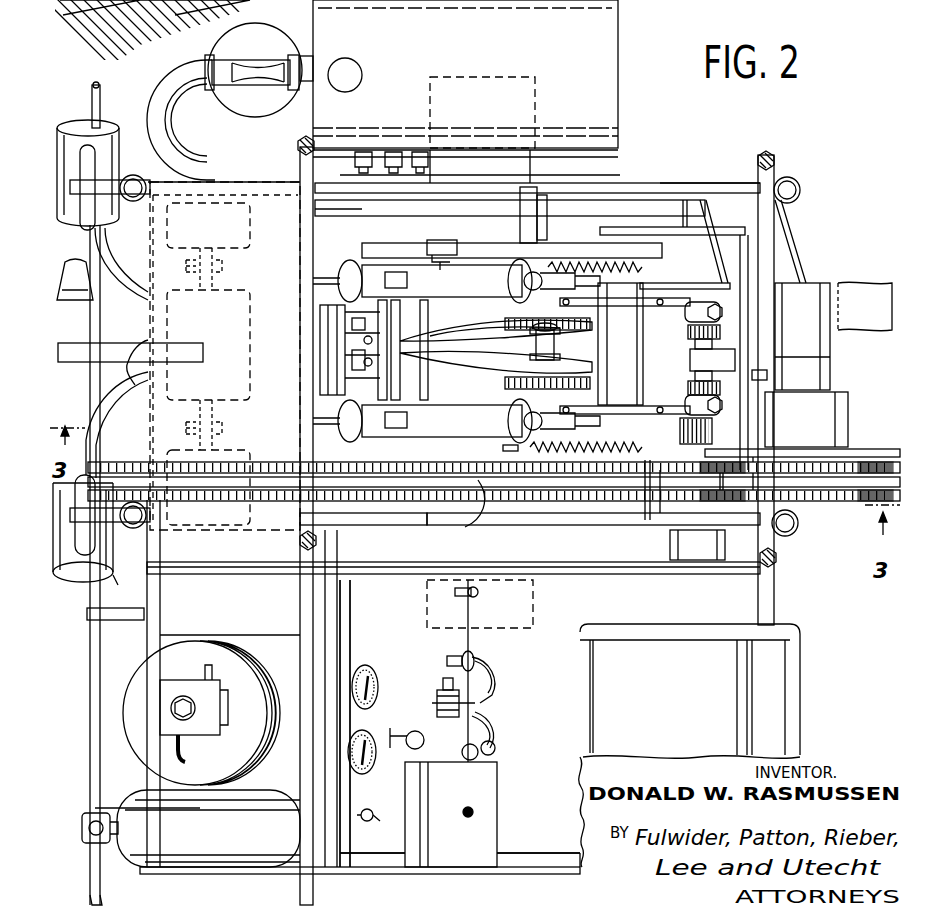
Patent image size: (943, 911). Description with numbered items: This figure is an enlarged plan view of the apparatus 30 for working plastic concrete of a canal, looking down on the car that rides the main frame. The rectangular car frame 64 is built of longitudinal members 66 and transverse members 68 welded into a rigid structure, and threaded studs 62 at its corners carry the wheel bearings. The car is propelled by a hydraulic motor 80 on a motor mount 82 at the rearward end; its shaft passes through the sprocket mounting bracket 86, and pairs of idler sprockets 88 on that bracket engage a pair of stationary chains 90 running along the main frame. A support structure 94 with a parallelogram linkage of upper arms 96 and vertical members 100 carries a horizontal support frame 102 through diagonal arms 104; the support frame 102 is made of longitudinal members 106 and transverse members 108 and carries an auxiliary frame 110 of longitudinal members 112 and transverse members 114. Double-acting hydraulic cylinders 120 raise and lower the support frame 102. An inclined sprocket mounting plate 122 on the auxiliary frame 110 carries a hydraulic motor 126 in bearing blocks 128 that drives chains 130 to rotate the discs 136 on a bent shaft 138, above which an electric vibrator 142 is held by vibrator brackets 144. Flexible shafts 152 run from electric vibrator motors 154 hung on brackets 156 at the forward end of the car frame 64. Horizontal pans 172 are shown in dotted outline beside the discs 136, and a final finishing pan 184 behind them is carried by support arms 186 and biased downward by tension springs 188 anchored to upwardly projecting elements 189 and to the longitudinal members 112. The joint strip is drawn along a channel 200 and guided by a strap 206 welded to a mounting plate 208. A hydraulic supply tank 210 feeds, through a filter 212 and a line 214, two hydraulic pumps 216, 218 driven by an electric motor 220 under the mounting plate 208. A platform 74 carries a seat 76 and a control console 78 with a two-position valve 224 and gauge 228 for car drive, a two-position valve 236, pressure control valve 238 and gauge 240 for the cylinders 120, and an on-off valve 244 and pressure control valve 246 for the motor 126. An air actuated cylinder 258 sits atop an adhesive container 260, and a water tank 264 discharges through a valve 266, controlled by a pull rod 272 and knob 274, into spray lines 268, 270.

The apparatus 30 is at (740, 130).
The threaded stud 62 is at (298, 145).
The car frame 64 is at (673, 182).
The longitudinal members 66 is at (611, 188).
The transverse members 68 is at (314, 248).
The platform 74 is at (460, 723).
The seat 76 is at (649, 625).
The control console 78 is at (471, 638).
The hydraulic motor 80 is at (815, 284).
The motor mount 82 is at (843, 396).
The sprocket mounting bracket 86 is at (868, 450).
The idler sprockets 88 is at (871, 520).
The stationary chains 90 is at (648, 477).
The support structure 94 is at (618, 208).
The upper arms 96 is at (315, 211).
The vertical members 100 is at (545, 220).
The support frame 102 is at (724, 215).
The diagonal arms 104 is at (503, 230).
The longitudinal members 106 is at (676, 233).
The transverse members 108 is at (313, 386).
The auxiliary frame 110 is at (648, 276).
The longitudinal members 112 is at (610, 288).
The transverse members 114 is at (410, 393).
The double-acting hydraulic cylinders 120 is at (469, 351).
The sprocket mounting plate 122 is at (730, 414).
The hydraulic motor 126 is at (688, 551).
The bearing blocks 128 is at (686, 313).
The chains 130 is at (513, 386).
The discs 136 is at (496, 348).
The shaft 138 is at (547, 356).
The electric vibrator 142 is at (642, 344).
The vibrator brackets 144 is at (600, 380).
The flexible shafts 152 is at (108, 286).
The electric vibrator motors 154 is at (98, 123).
The brackets 156 is at (110, 183).
The pans 172 is at (537, 82).
The final finishing pan 184 is at (782, 254).
The support arms 186 is at (632, 250).
The tension springs 188 is at (566, 262).
The upwardly projecting elements 189 is at (503, 229).
The channel 200 is at (73, 301).
The strap 206 is at (83, 362).
The mounting plate 208 is at (240, 172).
The supply tank 210 is at (620, 38).
The filter 212 is at (270, 36).
The line 214 is at (163, 126).
The hydraulic pump 216 is at (246, 252).
The hydraulic pump 218 is at (247, 451).
The electric motor 220 is at (245, 291).
The two-position valve 224 is at (414, 731).
The gauge 228 is at (360, 771).
The two-position valve 236 is at (472, 762).
The pressure control valve 238 is at (480, 704).
The gauge 240 is at (367, 665).
The on-off valve 244 is at (462, 660).
The pressure control valve 246 is at (479, 593).
The air actuated cylinder 258 is at (180, 686).
The container 260 is at (200, 638).
The water tank 264 is at (208, 828).
The valve 266 is at (92, 811).
The line 268 is at (92, 893).
The line 270 is at (92, 752).
The pull rod 272 is at (258, 811).
The knob 274 is at (368, 822).